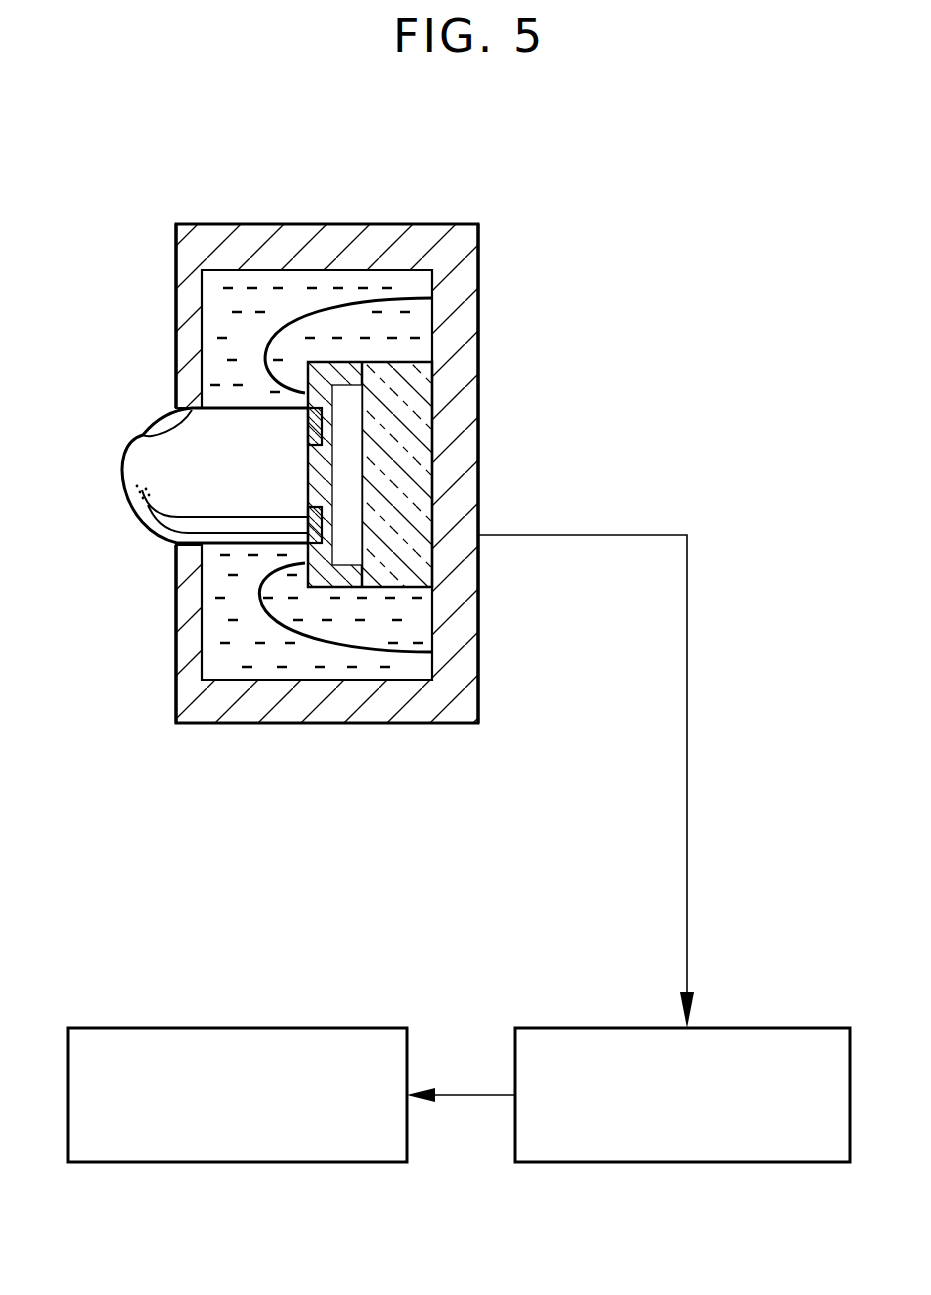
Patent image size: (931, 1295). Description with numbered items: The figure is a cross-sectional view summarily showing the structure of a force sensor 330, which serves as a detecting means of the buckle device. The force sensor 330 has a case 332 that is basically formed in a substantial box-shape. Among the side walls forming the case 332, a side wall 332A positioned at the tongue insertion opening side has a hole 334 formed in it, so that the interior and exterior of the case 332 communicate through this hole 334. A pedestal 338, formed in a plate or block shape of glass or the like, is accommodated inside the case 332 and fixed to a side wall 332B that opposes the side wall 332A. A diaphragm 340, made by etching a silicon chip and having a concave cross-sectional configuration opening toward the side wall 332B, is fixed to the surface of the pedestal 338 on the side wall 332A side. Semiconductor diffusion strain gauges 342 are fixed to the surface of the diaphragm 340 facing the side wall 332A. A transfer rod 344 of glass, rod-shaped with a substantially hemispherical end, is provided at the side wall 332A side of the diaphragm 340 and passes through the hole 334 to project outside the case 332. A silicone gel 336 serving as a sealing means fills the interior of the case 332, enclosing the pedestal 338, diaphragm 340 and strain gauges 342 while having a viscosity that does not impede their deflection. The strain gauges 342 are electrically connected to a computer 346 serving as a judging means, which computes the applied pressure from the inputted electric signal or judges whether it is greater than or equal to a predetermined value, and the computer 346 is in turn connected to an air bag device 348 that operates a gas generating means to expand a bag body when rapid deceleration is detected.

The force sensor 330 is at (352, 198).
The case 332 is at (342, 442).
The side wall 332A is at (176, 290).
The side wall 332B is at (478, 325).
The hole 334 is at (147, 433).
The silicone gel 336 is at (265, 282).
The pedestal 338 is at (417, 440).
The diaphragm 340 is at (308, 393).
The semiconductor diffusion strain gauges 342 is at (322, 438).
The transfer rod 344 is at (133, 508).
The computer 346 is at (608, 1028).
The air bag device 348 is at (283, 1028).